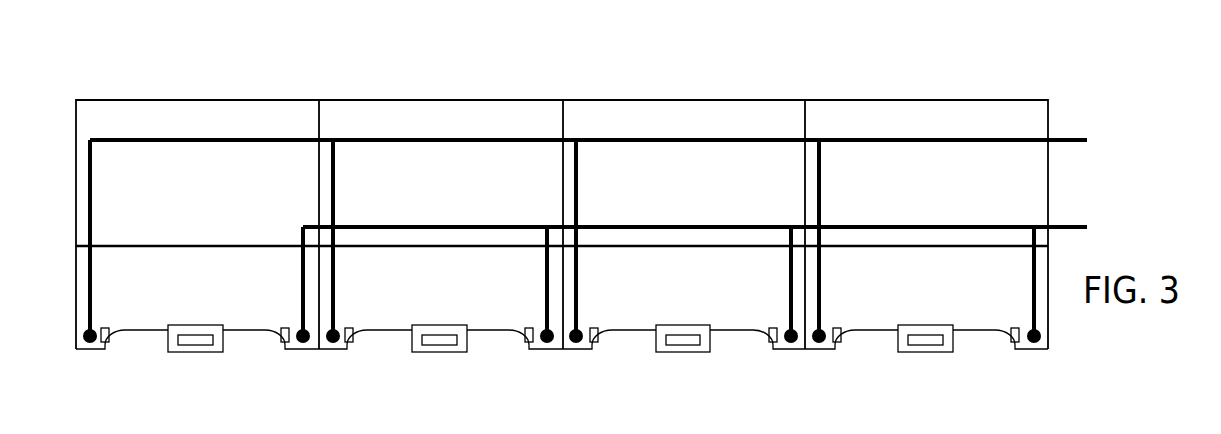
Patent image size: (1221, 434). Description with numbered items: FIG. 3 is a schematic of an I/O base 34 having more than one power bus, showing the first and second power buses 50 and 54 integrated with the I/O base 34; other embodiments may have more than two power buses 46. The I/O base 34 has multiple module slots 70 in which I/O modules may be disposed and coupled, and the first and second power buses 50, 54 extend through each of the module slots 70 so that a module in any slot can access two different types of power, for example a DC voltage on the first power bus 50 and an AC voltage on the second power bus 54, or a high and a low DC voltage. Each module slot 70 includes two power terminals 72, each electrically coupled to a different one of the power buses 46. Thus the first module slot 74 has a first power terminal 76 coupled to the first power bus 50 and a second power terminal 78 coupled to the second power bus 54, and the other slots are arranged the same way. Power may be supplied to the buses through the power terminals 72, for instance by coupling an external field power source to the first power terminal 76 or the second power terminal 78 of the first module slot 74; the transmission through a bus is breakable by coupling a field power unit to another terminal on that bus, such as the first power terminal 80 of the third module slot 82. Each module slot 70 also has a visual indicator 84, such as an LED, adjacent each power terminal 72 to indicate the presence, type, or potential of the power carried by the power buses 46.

The I/O base 34 is at (138, 78).
The module slot 70 is at (221, 93).
The power buses 46 is at (581, 193).
The first power bus 50 is at (686, 156).
The second power bus 54 is at (913, 220).
The power terminal 72 is at (90, 359).
The first module slot 74 is at (150, 338).
The first power terminal 76 is at (100, 358).
The second power terminal 78 is at (288, 358).
The first power terminal 80 is at (600, 359).
The third module slot 82 is at (728, 340).
The visual indicator 84 is at (108, 324).